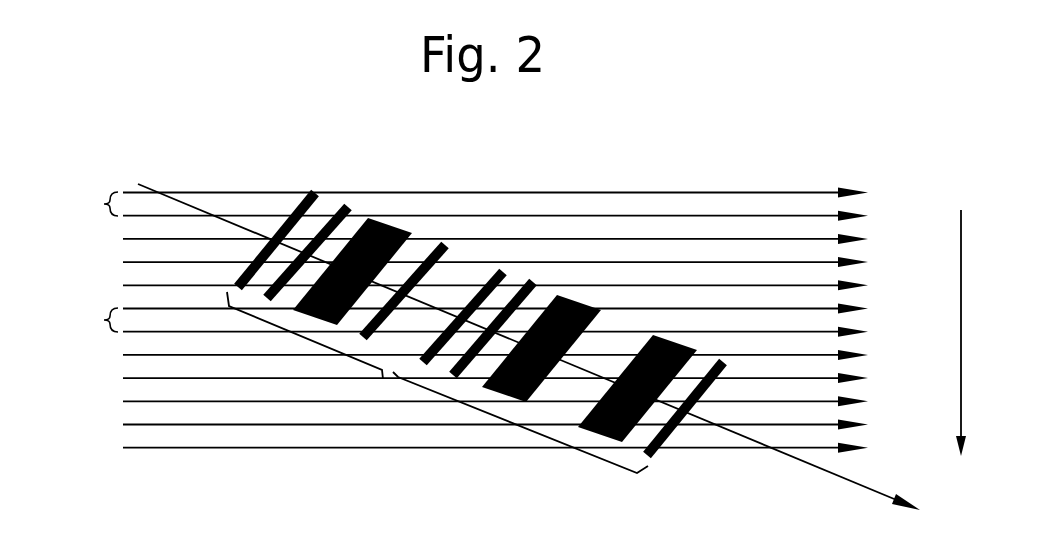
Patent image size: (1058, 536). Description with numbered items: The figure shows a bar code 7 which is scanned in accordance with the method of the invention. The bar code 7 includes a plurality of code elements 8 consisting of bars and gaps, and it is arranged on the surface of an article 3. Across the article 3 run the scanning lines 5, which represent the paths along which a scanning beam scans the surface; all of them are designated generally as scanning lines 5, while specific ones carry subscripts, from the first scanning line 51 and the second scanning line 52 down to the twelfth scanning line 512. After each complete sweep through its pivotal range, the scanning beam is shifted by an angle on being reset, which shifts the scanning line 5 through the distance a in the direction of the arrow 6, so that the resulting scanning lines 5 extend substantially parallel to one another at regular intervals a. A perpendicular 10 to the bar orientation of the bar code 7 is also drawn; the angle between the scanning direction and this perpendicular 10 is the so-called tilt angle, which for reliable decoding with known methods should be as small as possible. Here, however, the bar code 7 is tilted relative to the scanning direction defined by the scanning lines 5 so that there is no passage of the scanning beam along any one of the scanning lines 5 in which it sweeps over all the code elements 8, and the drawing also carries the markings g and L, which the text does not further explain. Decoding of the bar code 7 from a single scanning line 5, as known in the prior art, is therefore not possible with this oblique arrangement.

The article 3 is at (480, 290).
The scanning lines 5 is at (632, 192).
The first scanning line 51 is at (681, 192).
The second scanning line 52 is at (743, 215).
The twelfth scanning line 512 is at (708, 448).
The arrow 6 is at (960, 212).
The bar code 7 is at (571, 286).
The code elements 8 is at (347, 206).
The perpendicular 10 is at (529, 331).
The distance a is at (101, 261).
The grating line g is at (828, 472).
The grating length L is at (383, 379).